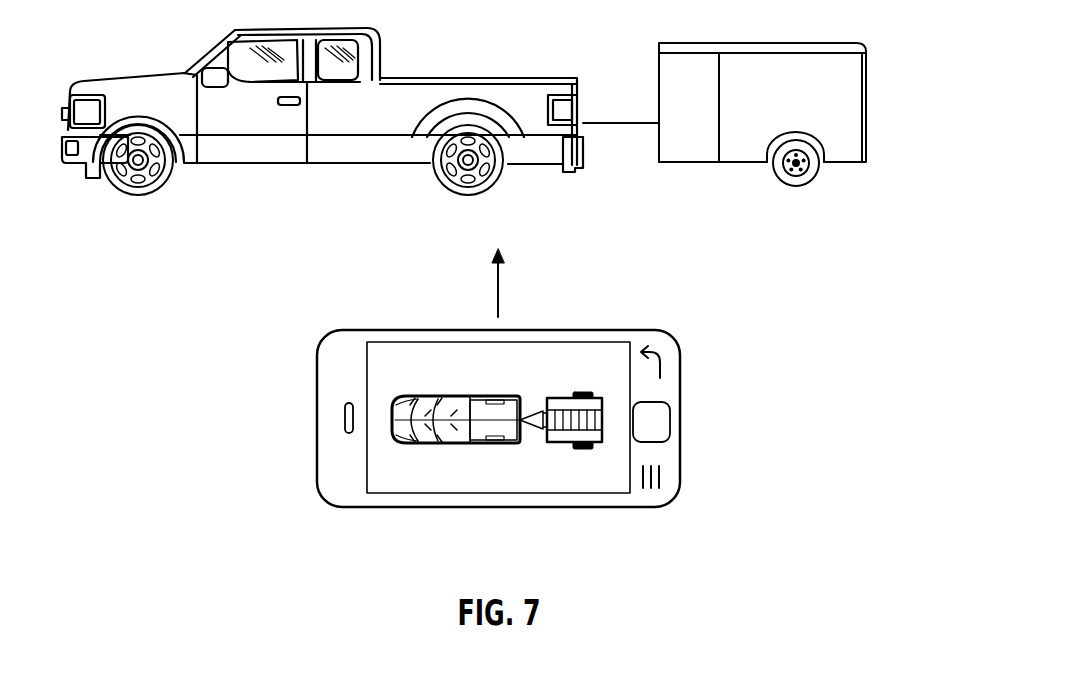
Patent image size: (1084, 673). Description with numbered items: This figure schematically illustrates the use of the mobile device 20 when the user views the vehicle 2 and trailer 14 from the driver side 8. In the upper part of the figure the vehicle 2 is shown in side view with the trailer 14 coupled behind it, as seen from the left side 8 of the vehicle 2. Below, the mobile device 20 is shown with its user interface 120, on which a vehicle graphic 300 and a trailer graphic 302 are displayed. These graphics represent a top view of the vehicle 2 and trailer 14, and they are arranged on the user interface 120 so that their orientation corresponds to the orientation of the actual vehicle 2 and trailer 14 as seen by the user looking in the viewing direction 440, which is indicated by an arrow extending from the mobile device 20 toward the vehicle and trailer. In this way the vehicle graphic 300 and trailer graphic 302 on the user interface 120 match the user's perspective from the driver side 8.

The vehicle 2 is at (327, 167).
The left side 8 is at (408, 78).
The trailer 14 is at (762, 65).
The mobile device 20 is at (583, 507).
The user interface 120 is at (493, 483).
The vehicle graphic 300 is at (460, 397).
The trailer graphic 302 is at (568, 398).
The viewing direction 440 is at (498, 290).